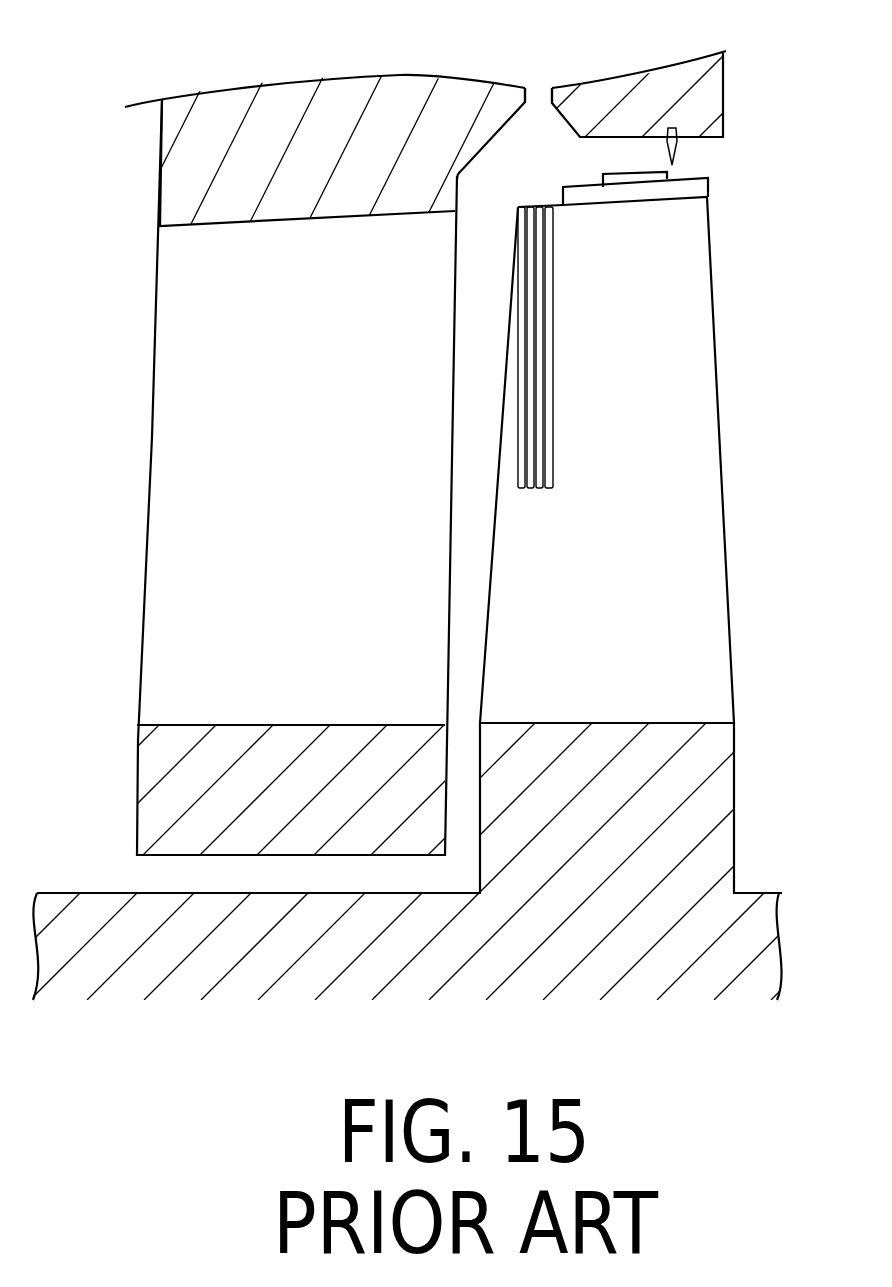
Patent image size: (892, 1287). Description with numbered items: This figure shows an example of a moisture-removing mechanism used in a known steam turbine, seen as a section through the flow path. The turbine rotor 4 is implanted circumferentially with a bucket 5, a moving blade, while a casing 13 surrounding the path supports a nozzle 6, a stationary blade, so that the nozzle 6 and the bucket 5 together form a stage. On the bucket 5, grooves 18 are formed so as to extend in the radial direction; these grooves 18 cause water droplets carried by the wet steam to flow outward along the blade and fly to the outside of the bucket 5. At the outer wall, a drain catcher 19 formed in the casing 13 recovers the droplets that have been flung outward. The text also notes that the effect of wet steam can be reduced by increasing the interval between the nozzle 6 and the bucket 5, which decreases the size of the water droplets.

The turbine rotor 4 is at (712, 795).
The bucket 5 is at (698, 287).
The nozzle 6 is at (183, 412).
The casing 13 is at (183, 153).
The groove 18 is at (552, 448).
The drain catcher 19 is at (530, 137).